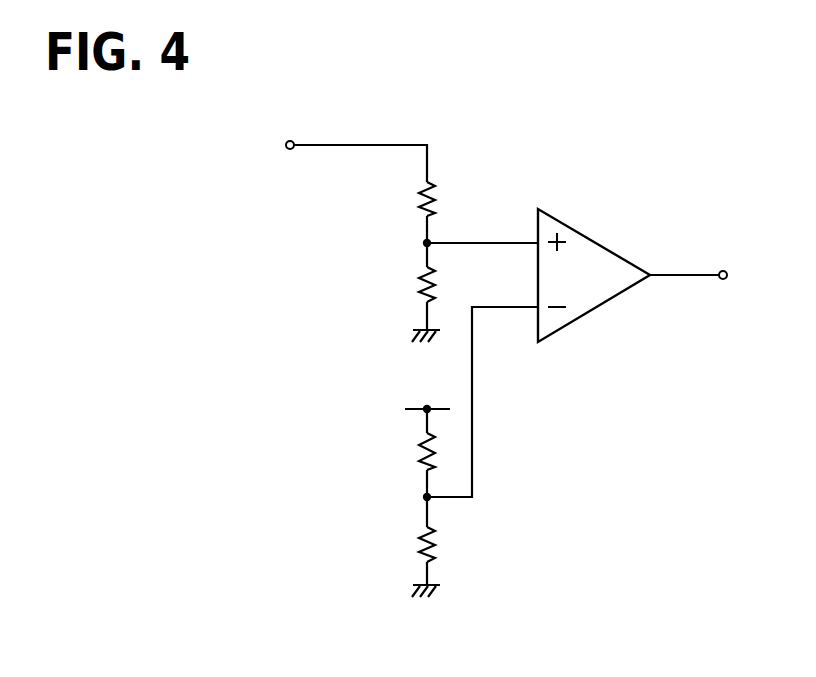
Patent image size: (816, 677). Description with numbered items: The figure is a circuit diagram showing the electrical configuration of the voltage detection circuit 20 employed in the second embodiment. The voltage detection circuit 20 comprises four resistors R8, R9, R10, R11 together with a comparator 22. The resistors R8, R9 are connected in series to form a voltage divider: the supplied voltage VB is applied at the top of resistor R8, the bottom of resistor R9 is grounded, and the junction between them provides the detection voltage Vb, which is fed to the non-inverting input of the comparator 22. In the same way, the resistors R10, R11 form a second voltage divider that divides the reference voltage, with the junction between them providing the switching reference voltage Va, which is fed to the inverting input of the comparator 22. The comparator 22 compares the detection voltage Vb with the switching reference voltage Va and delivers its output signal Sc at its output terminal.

The voltage detection circuit 20 is at (483, 133).
The comparator 22 is at (593, 237).
The resistor R8 is at (420, 202).
The resistor R9 is at (420, 290).
The resistor R10 is at (416, 455).
The resistor R11 is at (416, 544).